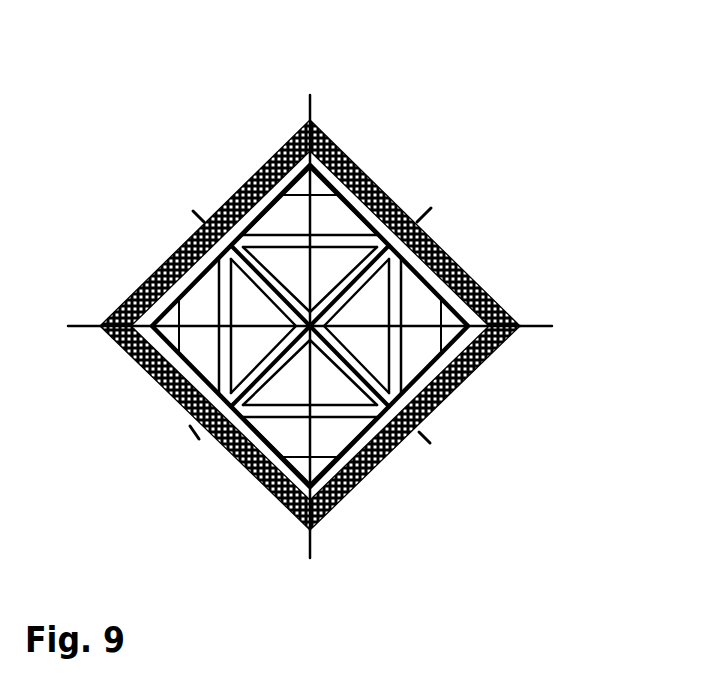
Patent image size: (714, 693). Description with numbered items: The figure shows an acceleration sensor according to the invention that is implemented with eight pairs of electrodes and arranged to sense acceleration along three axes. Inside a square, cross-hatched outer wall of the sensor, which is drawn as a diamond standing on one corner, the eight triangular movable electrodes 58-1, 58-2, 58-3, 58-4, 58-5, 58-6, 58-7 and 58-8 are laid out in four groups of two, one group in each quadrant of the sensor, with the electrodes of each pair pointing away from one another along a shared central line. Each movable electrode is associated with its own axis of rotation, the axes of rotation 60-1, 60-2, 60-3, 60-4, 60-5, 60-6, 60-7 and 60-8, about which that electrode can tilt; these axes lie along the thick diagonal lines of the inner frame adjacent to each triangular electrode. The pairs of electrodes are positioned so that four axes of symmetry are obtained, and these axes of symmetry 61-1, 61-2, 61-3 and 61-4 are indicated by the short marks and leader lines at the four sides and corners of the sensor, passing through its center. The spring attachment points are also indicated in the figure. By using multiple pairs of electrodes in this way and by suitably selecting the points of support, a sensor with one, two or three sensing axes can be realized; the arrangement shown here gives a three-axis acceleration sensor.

The triangular movable electrode 58-1 is at (396, 273).
The triangular movable electrode 58-2 is at (486, 294).
The triangular movable electrode 58-3 is at (398, 452).
The triangular movable electrode 58-4 is at (255, 483).
The triangular movable electrode 58-5 is at (185, 405).
The triangular movable electrode 58-6 is at (135, 360).
The triangular movable electrode 58-7 is at (240, 183).
The triangular movable electrode 58-8 is at (287, 252).
The axis of rotation 60-1 is at (351, 301).
The axis of rotation 60-2 is at (478, 301).
The axis of rotation 60-3 is at (383, 460).
The axis of rotation 60-4 is at (291, 488).
The axis of rotation 60-5 is at (193, 418).
The axis of rotation 60-6 is at (166, 339).
The axis of rotation 60-7 is at (255, 220).
The axis of rotation 60-8 is at (328, 298).
The axis of symmetry 61-1 is at (419, 221).
The axis of symmetry 61-2 is at (543, 330).
The axis of symmetry 61-3 is at (428, 441).
The axis of symmetry 61-4 is at (311, 542).